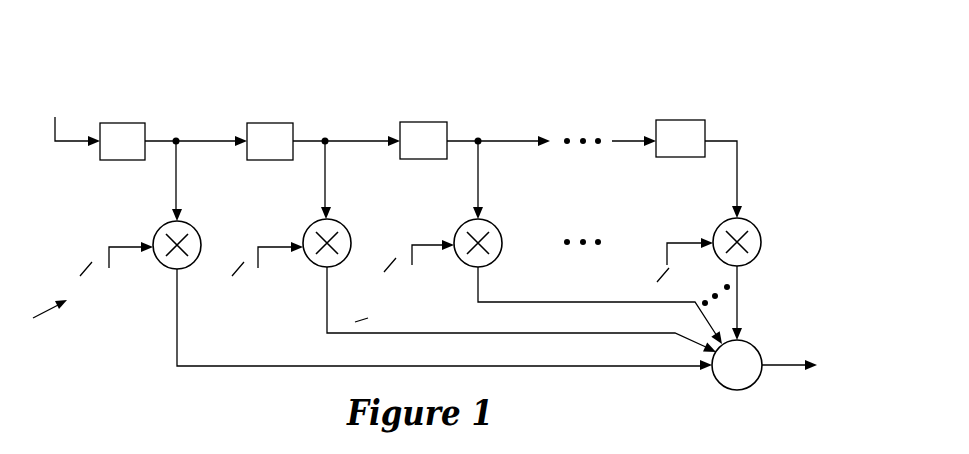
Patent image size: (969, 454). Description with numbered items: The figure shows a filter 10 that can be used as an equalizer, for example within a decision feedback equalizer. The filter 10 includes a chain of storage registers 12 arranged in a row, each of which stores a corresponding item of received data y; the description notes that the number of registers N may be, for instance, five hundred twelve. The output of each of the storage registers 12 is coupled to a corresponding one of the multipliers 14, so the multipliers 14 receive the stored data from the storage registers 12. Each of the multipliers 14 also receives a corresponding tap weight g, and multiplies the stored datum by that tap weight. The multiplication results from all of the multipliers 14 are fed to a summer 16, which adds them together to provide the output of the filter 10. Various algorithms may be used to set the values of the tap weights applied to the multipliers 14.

The filter 10 is at (510, 54).
The storage registers 12 is at (132, 122).
The multipliers 14 is at (195, 228).
The summer 16 is at (756, 347).